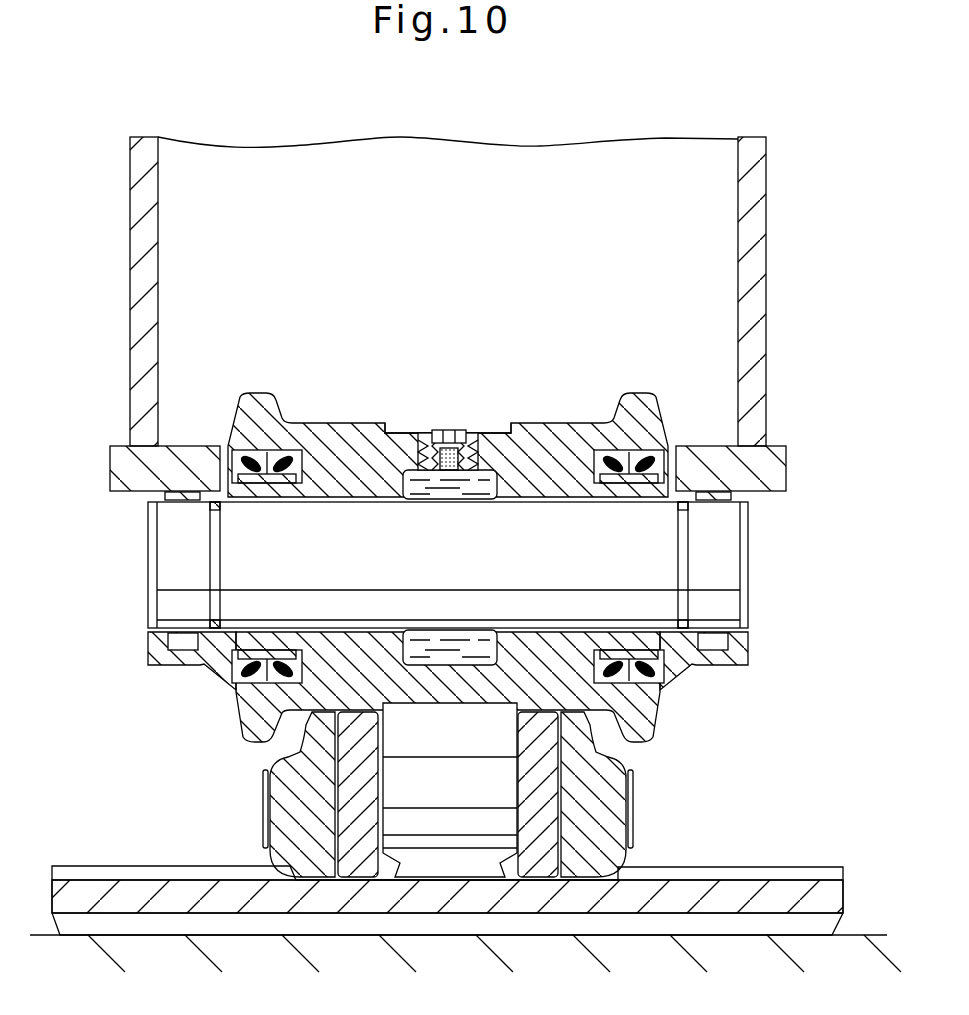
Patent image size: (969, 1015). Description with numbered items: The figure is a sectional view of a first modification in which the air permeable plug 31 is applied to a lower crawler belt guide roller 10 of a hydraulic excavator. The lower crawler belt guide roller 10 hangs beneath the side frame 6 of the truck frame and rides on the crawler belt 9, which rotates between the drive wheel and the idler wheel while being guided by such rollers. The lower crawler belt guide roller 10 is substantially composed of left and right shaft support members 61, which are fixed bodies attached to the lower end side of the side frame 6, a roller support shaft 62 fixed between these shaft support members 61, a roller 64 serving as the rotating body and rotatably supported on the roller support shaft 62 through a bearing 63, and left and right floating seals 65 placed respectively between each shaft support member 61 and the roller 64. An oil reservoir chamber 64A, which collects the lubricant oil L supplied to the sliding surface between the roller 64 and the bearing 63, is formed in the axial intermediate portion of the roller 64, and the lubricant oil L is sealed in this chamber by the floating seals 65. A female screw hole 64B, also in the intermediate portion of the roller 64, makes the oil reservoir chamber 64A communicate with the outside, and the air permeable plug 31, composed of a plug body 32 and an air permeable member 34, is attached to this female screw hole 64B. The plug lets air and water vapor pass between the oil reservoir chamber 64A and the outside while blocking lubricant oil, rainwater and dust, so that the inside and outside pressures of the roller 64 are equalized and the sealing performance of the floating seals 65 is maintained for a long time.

The side frame 6 is at (750, 288).
The crawler belt 9 is at (610, 806).
The lower crawler belt guide roller 10 is at (427, 527).
The air permeable plug 31 is at (446, 412).
The plug body 32 is at (488, 455).
The air permeable member 34 is at (426, 450).
The shaft support member 61 is at (218, 655).
The roller support shaft 62 is at (612, 557).
The bearing 63 is at (310, 504).
The roller 64 is at (262, 728).
The oil reservoir chamber 64A is at (406, 458).
The female screw hole 64B is at (470, 435).
The floating seal 65 is at (262, 442).
The lubricant oil L is at (545, 455).